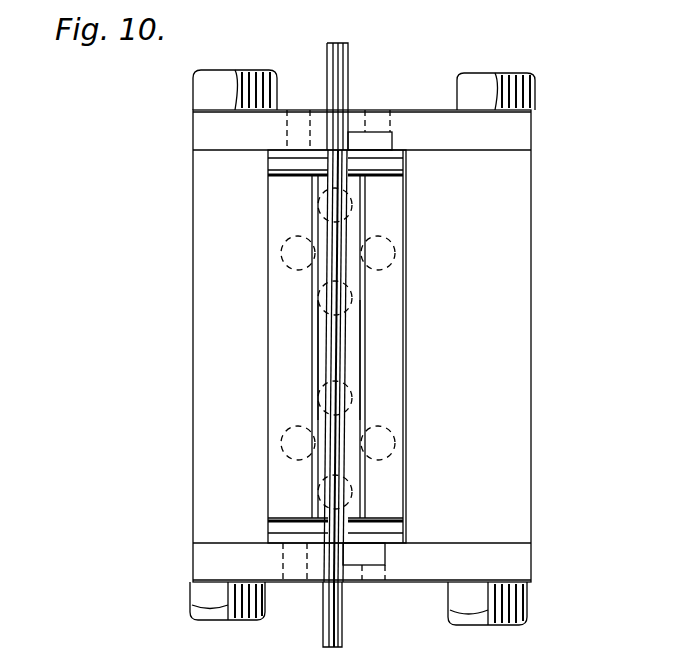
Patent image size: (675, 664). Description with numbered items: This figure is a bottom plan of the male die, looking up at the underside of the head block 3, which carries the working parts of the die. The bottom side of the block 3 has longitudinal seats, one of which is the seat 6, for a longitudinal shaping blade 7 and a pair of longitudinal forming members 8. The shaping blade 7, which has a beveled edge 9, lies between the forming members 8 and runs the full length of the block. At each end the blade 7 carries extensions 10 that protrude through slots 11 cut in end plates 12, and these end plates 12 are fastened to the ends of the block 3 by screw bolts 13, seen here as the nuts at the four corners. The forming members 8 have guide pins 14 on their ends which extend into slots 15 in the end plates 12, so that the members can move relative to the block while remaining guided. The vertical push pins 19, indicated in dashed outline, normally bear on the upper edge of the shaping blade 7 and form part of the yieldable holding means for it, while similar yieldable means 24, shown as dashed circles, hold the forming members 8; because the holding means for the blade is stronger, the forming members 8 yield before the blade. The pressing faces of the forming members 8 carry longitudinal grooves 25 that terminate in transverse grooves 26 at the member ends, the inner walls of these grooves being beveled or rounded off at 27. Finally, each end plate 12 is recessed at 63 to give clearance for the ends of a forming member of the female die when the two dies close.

The head block 3 is at (362, 346).
The longitudinal seat 6 is at (398, 382).
The shaping blade 7 is at (366, 338).
The forming members 8 is at (267, 378).
The beveled edge 9 is at (343, 620).
The extensions 10 is at (349, 58).
The slots 11 is at (352, 110).
The end plates 12 is at (362, 346).
The screw bolts 13 is at (537, 602).
The guide pins 14 is at (370, 108).
The slots 15 is at (395, 110).
The push pins 19 is at (312, 305).
The yieldable means 24 is at (392, 243).
The longitudinal grooves 25 is at (312, 372).
The transverse grooves 26 is at (272, 162).
The beveled inner walls 27 is at (275, 178).
The recess 63 is at (392, 138).